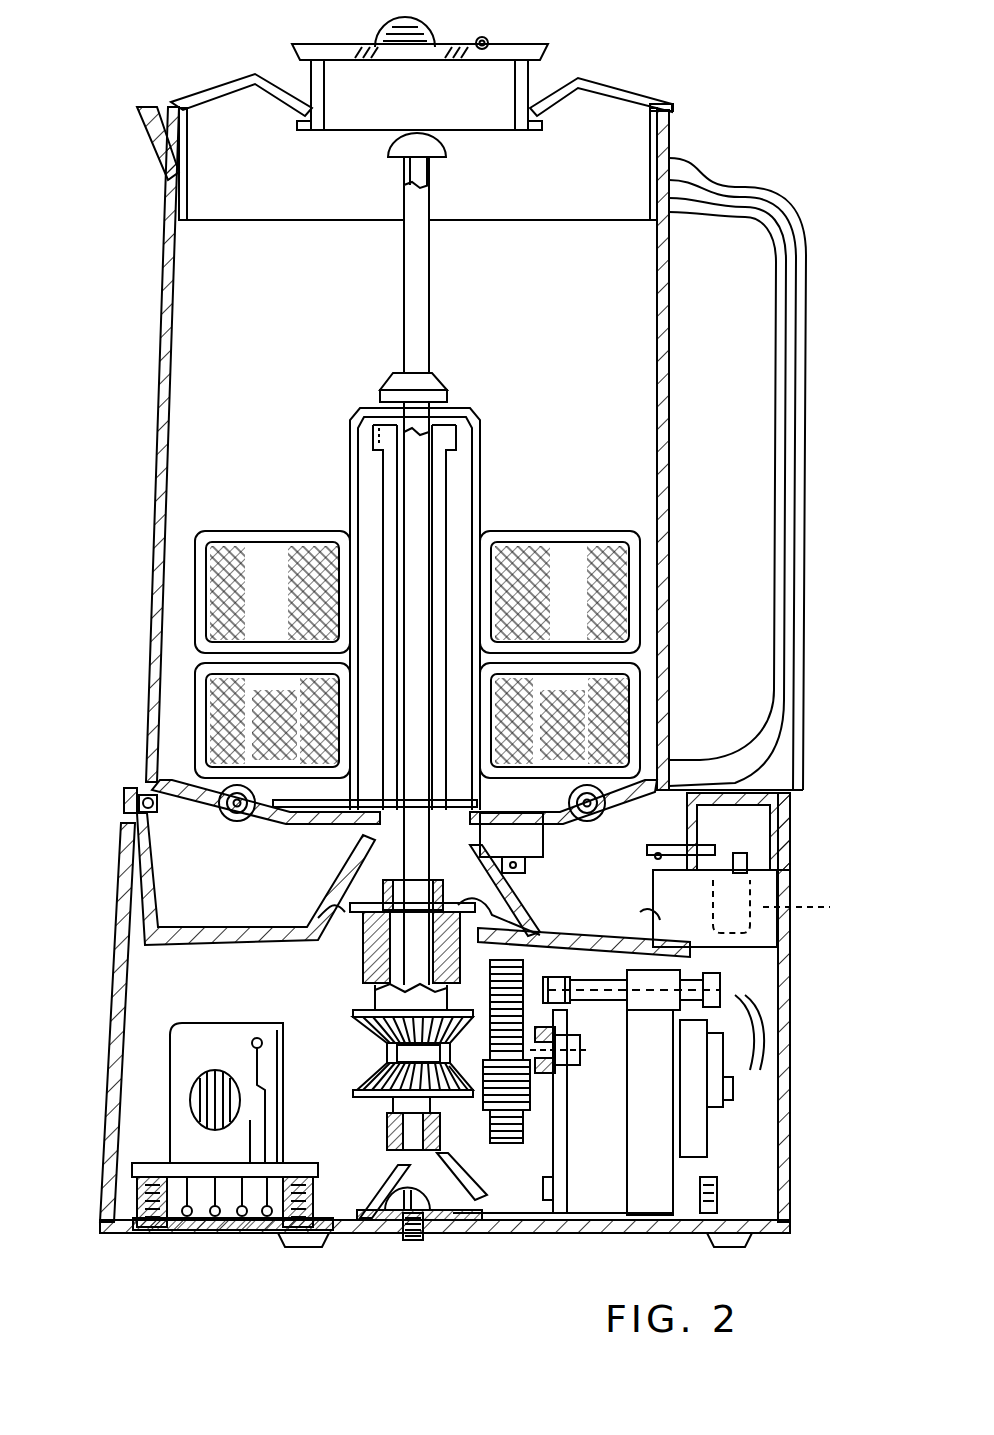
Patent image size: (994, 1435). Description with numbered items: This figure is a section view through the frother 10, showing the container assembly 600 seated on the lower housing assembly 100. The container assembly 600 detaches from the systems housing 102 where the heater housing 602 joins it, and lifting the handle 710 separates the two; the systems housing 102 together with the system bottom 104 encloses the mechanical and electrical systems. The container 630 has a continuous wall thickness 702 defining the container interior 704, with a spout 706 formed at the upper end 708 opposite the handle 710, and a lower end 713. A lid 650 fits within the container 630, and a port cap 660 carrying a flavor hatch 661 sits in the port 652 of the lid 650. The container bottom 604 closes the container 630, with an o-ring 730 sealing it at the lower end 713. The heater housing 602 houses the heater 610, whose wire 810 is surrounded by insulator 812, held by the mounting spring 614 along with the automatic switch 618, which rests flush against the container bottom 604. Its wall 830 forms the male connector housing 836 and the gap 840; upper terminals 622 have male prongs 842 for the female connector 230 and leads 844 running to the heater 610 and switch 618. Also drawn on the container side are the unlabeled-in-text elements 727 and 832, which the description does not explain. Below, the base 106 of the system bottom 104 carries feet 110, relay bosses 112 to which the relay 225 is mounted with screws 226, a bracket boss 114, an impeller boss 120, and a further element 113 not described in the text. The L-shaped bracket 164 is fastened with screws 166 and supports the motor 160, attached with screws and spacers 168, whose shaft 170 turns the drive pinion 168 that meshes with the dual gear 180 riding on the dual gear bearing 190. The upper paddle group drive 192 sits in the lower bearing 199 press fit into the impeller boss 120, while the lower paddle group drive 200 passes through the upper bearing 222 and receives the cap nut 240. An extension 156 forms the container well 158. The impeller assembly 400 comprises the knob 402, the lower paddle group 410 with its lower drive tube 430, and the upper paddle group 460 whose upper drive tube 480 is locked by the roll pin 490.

The frother 10 is at (125, 112).
The lower housing assembly 100 is at (100, 1120).
The systems housing 102 is at (90, 1045).
The system bottom 104 is at (525, 1233).
The base 106 is at (215, 1232).
The foot 110 is at (315, 1247).
The relay bosses 112 is at (135, 1218).
The bracket 113 is at (373, 1173).
The bracket boss 114 is at (452, 1222).
The impeller boss 120 is at (387, 1120).
The extension 156 is at (140, 892).
The container well 158 is at (160, 940).
The motor 160 is at (745, 1138).
The bracket 164 is at (563, 1215).
The screws 166 is at (418, 1240).
The drive pinion 168 is at (722, 990).
The shaft 170 is at (555, 1125).
The dual gear 180 is at (552, 1192).
The dual gear bearing 190 is at (565, 1040).
The upper paddle group drive 192 is at (362, 1068).
The lower bearing 199 is at (393, 1140).
The lower paddle group drive 200 is at (375, 1008).
The upper bearing 222 is at (365, 950).
The relay 225 is at (180, 1052).
The screws 226 is at (150, 1163).
The female connector 230 is at (762, 930).
The cap nut 240 is at (498, 917).
The impeller assembly 400 is at (494, 455).
The knob 402 is at (443, 143).
The lower paddle group 410 is at (642, 722).
The lower drive tube 430 is at (383, 890).
The upper paddle group 460 is at (520, 535).
The upper drive tube 480 is at (430, 297).
The roll pin 490 is at (387, 397).
The container assembly 600 is at (152, 357).
The heater housing 602 is at (310, 907).
The container bottom 604 is at (178, 782).
The heater 610 is at (213, 813).
The mounting spring 614 is at (267, 813).
The automatic switch 618 is at (540, 860).
The upper terminals 622 is at (738, 831).
The container 630 is at (166, 254).
The lid 650 is at (222, 90).
The port 652 is at (312, 120).
The port cap 660 is at (547, 47).
The flavor hatch 661 is at (422, 30).
The wall thickness 702 is at (192, 423).
The container interior 704 is at (421, 265).
The spout 706 is at (146, 130).
The upper end 708 is at (157, 105).
The handle 710 is at (800, 170).
The lower end 713 is at (145, 795).
The tube 727 is at (385, 503).
The o-ring 730 is at (124, 797).
The wire 810 is at (237, 810).
The insulator 812 is at (590, 812).
The wall 830 is at (148, 905).
The sloped wall 832 is at (471, 901).
The male connector housing 836 is at (658, 922).
The gap 840 is at (697, 832).
The male prongs 842 is at (840, 898).
The leads 844 is at (650, 858).